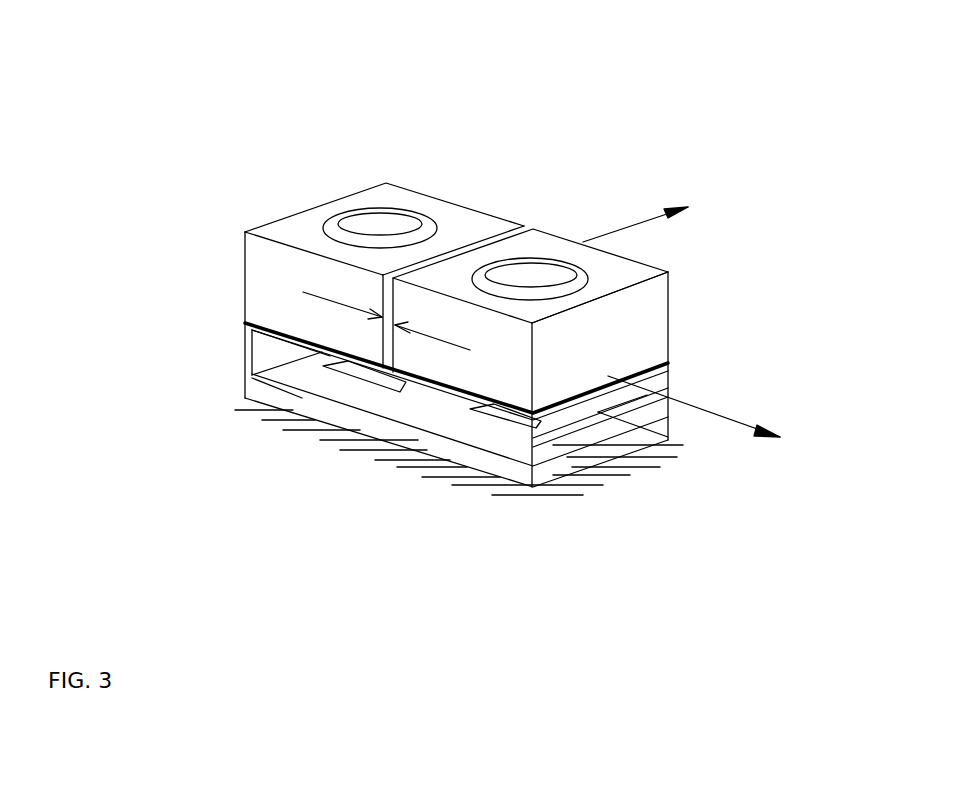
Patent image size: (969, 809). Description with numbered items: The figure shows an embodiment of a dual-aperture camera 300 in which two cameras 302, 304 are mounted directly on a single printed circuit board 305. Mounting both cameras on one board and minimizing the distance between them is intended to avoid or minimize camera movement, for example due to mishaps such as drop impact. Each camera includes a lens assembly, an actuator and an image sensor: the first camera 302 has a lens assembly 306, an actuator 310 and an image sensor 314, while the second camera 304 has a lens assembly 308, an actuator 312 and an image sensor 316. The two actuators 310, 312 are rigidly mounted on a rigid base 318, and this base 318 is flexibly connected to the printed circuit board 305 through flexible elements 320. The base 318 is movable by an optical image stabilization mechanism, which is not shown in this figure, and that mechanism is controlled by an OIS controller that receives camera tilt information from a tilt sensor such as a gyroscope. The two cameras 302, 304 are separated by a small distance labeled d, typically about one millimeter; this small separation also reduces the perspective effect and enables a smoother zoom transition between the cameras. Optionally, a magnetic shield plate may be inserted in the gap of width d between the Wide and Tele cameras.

The dual-aperture camera 300 is at (709, 30).
The camera 302 is at (296, 190).
The camera 304 is at (690, 295).
The printed circuit board 305 is at (428, 440).
The lens assembly 306 is at (386, 222).
The lens assembly 308 is at (521, 285).
The actuator 310 is at (275, 293).
The actuator 312 is at (640, 318).
The image sensor 314 is at (345, 382).
The image sensor 316 is at (503, 433).
The rigid base 318 is at (427, 387).
The flexible elements 320 is at (662, 400).